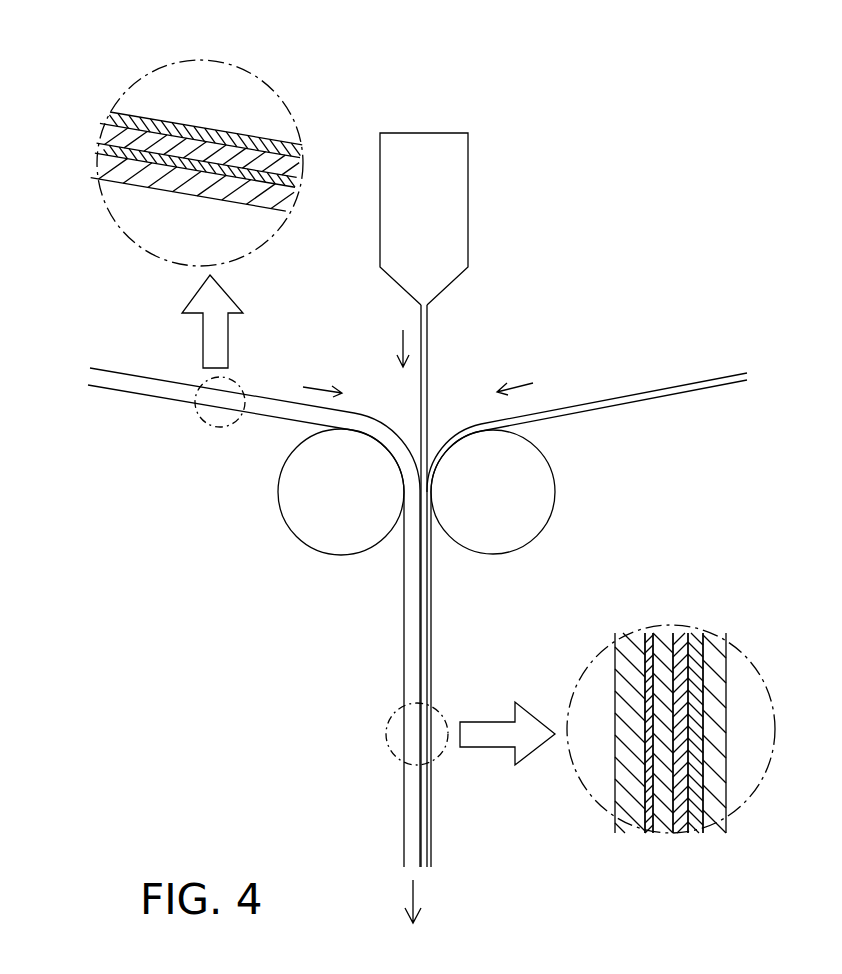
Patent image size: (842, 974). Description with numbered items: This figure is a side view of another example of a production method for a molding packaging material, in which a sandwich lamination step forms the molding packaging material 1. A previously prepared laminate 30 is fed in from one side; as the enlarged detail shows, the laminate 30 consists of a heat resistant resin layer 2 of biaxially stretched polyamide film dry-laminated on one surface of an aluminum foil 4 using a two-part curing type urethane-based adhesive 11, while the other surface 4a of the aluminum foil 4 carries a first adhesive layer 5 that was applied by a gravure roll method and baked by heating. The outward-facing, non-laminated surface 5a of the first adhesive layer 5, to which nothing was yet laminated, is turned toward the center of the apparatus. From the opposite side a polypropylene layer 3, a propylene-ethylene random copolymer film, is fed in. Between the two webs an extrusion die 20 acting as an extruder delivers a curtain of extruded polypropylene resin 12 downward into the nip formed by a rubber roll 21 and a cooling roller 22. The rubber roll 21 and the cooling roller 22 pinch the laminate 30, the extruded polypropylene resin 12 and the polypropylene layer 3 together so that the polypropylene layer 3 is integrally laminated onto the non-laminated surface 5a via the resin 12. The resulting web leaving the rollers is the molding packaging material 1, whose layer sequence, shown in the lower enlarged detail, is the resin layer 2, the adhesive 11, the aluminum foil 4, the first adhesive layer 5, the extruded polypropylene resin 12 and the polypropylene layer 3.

The molding packaging material 1 is at (740, 712).
The heat resistant resin layer 2 is at (107, 167).
The polypropylene layer 3 is at (661, 390).
The aluminum foil 4 is at (358, 425).
The other surface of the aluminum foil 4a is at (208, 89).
The first adhesive layer 5 is at (118, 118).
The non-laminated surface of the first adhesive layer 5a is at (353, 417).
The urethane-based adhesive 11 is at (107, 148).
The extruded polypropylene resin 12 is at (427, 363).
The extrusion die 20 is at (447, 200).
The rubber roll 21 is at (323, 515).
The cooling roller 22 is at (497, 527).
The laminate 30 is at (254, 596).